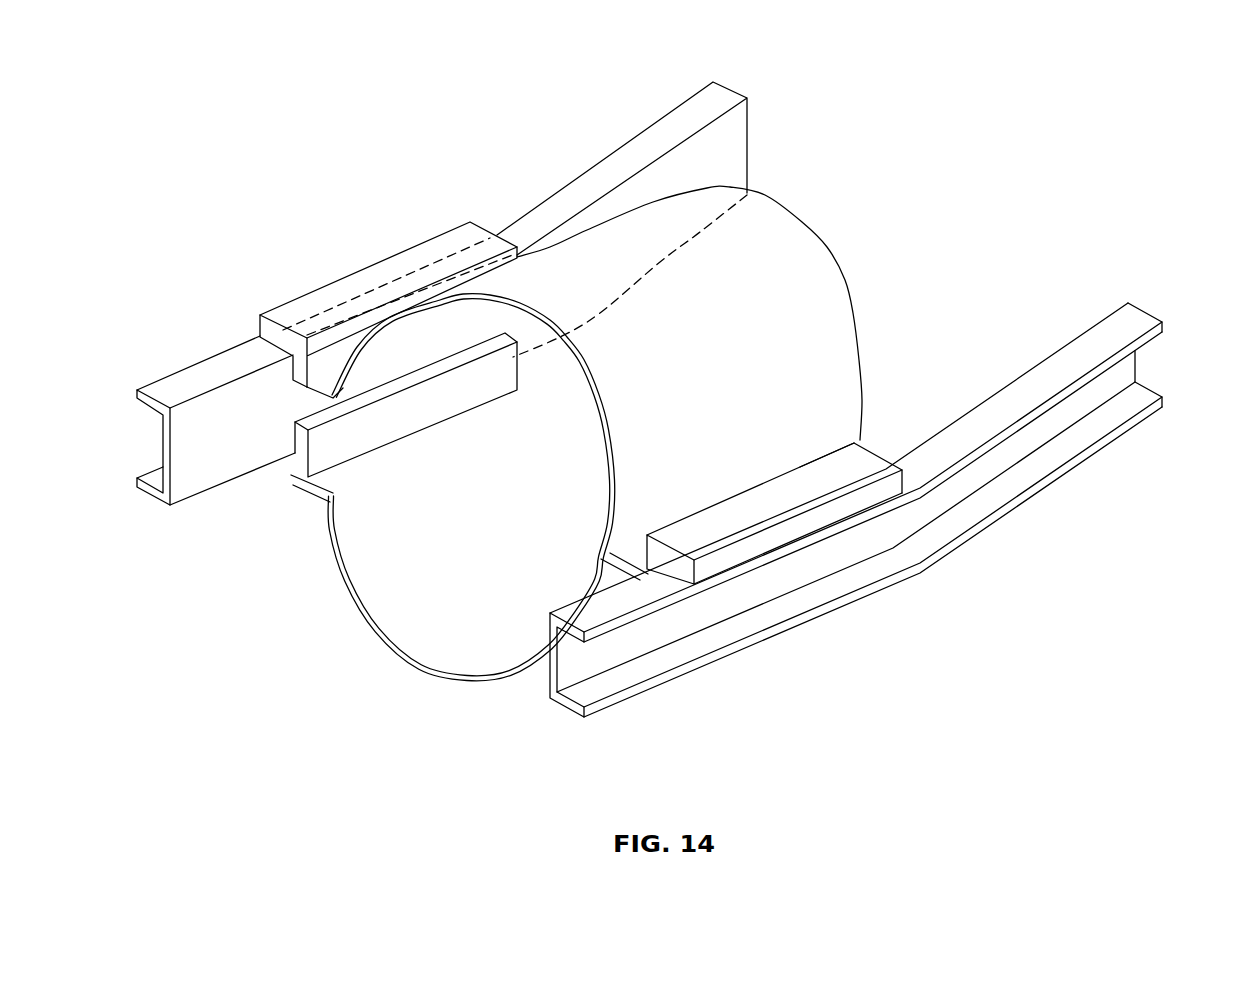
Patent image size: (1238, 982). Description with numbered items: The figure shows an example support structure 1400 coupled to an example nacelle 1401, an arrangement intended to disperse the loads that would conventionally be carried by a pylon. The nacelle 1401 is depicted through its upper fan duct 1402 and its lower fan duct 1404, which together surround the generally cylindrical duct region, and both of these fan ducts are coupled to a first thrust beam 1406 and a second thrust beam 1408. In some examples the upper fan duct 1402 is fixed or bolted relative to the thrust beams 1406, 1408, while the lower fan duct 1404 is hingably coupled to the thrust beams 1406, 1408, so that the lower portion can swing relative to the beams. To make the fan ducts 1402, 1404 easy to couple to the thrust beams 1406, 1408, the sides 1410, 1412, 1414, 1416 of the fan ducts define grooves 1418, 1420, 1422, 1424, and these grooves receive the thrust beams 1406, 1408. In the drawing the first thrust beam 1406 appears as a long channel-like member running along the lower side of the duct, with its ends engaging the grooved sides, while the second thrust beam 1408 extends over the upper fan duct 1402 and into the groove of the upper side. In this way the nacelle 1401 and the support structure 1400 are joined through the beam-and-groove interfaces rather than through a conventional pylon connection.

The support structure 1400 is at (1030, 557).
The nacelle 1401 is at (423, 188).
The upper fan duct 1402 is at (820, 270).
The lower fan duct 1404 is at (428, 652).
The first thrust beam 1406 is at (1142, 320).
The second thrust beam 1408 is at (707, 100).
The side of fan duct 1410 is at (872, 478).
The side of fan duct 1412 is at (372, 298).
The side of fan duct 1414 is at (355, 420).
The side of fan duct 1416 is at (797, 632).
The groove 1418 is at (676, 566).
The groove 1420 is at (276, 345).
The groove 1422 is at (282, 468).
The groove 1424 is at (638, 705).